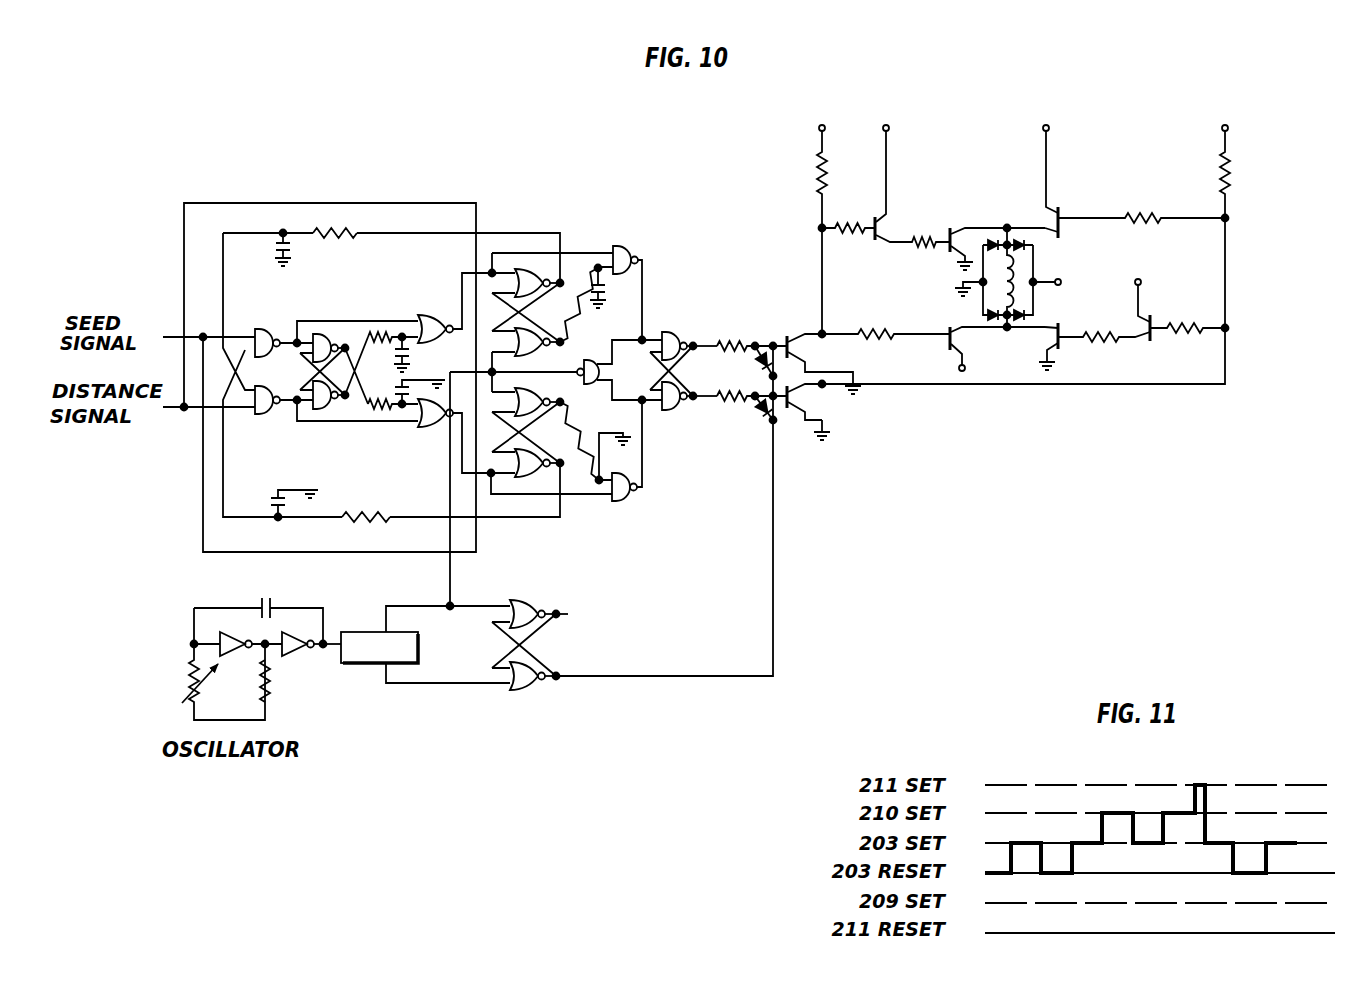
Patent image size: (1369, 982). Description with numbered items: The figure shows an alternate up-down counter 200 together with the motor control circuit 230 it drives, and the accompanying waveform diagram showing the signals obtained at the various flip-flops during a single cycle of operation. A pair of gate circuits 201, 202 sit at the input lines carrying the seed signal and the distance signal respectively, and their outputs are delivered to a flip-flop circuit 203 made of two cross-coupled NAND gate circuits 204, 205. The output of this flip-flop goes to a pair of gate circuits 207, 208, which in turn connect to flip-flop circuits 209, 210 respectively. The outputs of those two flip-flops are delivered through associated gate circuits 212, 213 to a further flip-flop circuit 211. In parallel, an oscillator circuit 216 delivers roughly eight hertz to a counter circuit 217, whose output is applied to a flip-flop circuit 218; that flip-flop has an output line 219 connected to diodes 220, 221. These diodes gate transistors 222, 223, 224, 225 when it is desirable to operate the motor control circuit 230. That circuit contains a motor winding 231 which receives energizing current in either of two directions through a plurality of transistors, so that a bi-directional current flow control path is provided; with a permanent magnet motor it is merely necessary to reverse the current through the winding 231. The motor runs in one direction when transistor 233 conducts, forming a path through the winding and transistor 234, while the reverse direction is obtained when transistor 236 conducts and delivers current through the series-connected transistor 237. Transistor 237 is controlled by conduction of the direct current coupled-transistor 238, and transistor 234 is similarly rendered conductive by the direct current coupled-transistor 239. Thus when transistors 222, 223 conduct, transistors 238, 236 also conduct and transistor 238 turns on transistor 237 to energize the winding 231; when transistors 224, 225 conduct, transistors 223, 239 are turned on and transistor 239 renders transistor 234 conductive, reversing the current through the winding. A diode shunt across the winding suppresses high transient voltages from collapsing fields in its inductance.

The up-down counter 200 is at (505, 210).
The gate circuit 201 is at (262, 330).
The gate circuit 202 is at (265, 416).
The flip-flop circuit 203 is at (368, 285).
The NAND gate circuit 204 is at (318, 333).
The NAND gate circuit 205 is at (318, 412).
The gate circuit 207 is at (432, 428).
The gate circuit 208 is at (432, 315).
The flip-flop circuit 209 is at (562, 506).
The flip-flop circuit 210 is at (568, 268).
The flip-flop circuit 211 is at (690, 412).
The gate circuit 212 is at (628, 498).
The gate circuit 213 is at (628, 248).
The oscillator circuit 216 is at (281, 668).
The counter circuit 217 is at (419, 653).
The flip-flop circuit 218 is at (562, 636).
The output line 219 is at (682, 676).
The diode 220 is at (758, 350).
The diode 221 is at (760, 410).
The transistor 222 is at (763, 340).
The transistor 223 is at (825, 342).
The transistor 224 is at (798, 418).
The transistor 225 is at (832, 420).
The motor control circuit 230 is at (1021, 147).
The motor winding 231 is at (1020, 276).
The transistor 233 is at (1052, 208).
The transistor 234 is at (1060, 325).
The transistor 236 is at (928, 340).
The transistor 237 is at (955, 226).
The direct current coupled-transistor 238 is at (873, 222).
The direct current coupled-transistor 239 is at (1150, 318).